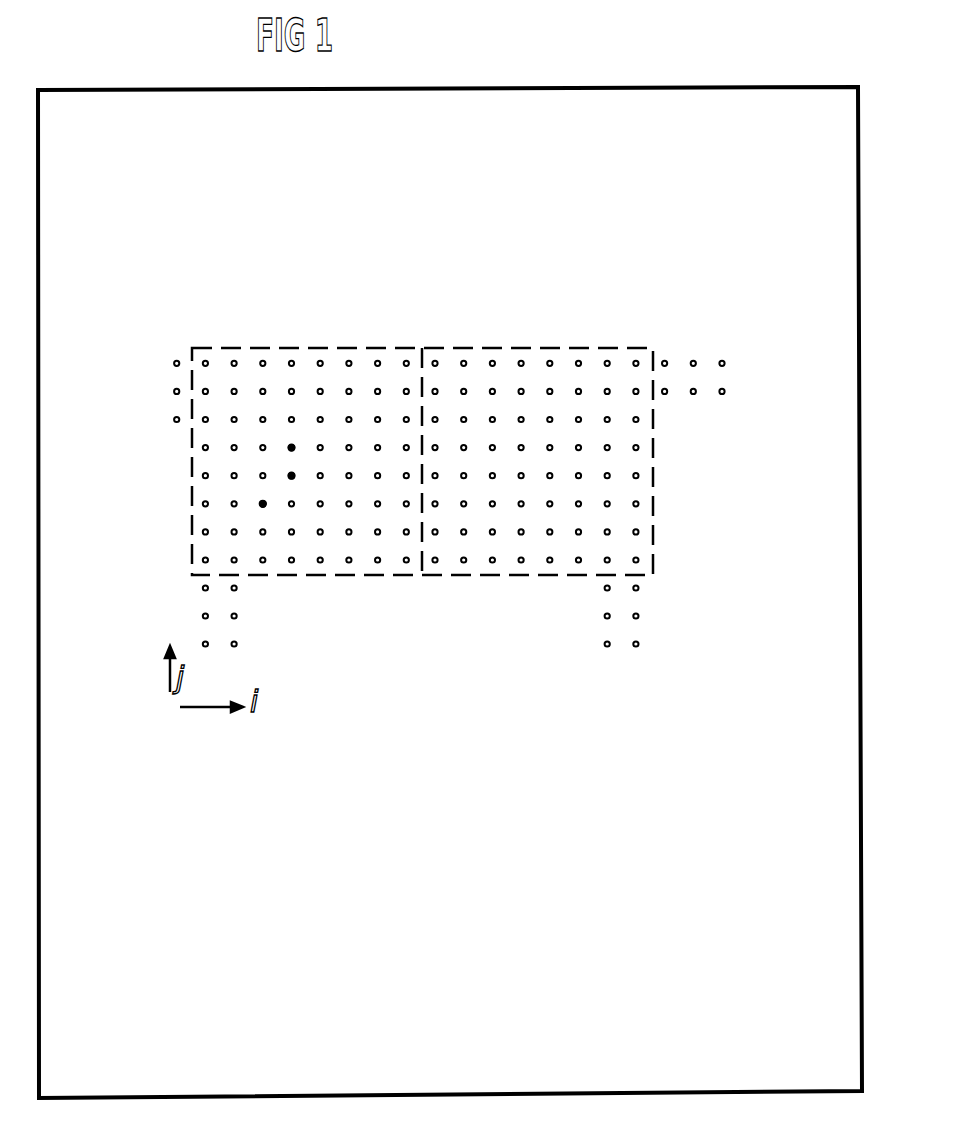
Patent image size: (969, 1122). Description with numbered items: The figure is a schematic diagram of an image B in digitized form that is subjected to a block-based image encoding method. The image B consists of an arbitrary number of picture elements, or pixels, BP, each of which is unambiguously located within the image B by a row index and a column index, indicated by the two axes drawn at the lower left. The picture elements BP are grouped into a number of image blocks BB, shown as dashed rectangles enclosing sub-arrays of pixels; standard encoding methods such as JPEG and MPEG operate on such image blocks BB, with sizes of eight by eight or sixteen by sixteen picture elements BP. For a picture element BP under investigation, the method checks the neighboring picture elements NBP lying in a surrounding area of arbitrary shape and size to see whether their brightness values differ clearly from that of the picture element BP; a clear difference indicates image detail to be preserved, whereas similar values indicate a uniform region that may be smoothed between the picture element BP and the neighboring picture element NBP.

The image B is at (620, 88).
The image block BB is at (288, 348).
The neighboring picture element NBP is at (292, 448).
The picture element BP is at (292, 476).